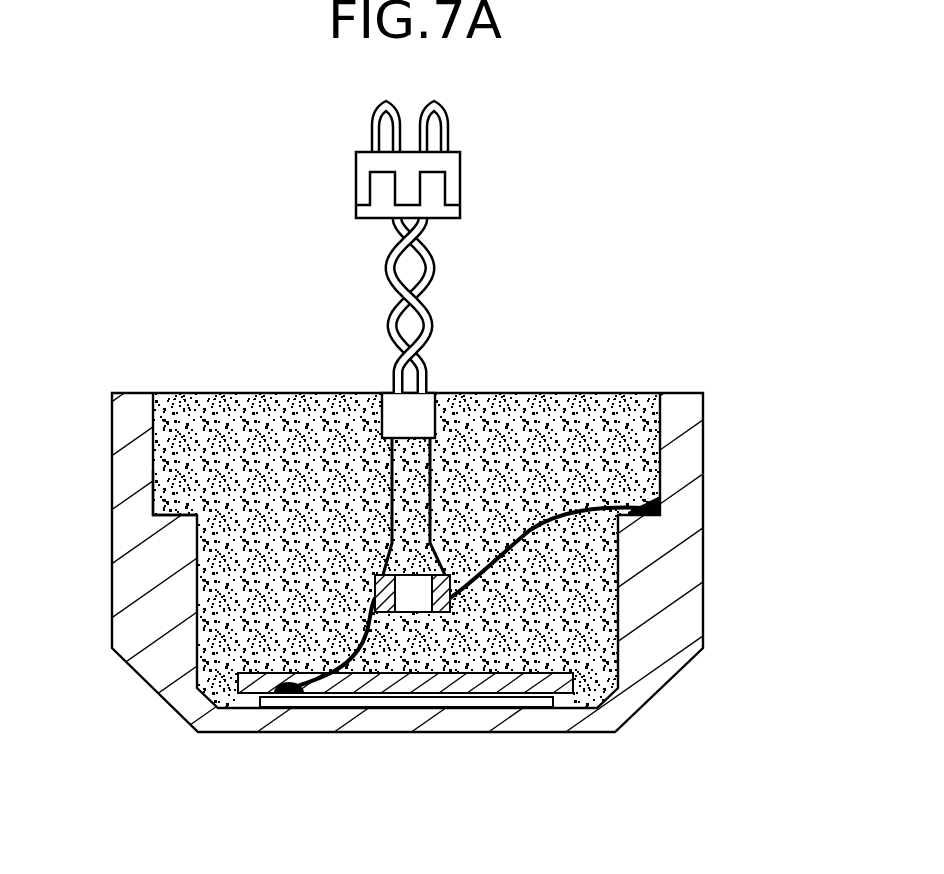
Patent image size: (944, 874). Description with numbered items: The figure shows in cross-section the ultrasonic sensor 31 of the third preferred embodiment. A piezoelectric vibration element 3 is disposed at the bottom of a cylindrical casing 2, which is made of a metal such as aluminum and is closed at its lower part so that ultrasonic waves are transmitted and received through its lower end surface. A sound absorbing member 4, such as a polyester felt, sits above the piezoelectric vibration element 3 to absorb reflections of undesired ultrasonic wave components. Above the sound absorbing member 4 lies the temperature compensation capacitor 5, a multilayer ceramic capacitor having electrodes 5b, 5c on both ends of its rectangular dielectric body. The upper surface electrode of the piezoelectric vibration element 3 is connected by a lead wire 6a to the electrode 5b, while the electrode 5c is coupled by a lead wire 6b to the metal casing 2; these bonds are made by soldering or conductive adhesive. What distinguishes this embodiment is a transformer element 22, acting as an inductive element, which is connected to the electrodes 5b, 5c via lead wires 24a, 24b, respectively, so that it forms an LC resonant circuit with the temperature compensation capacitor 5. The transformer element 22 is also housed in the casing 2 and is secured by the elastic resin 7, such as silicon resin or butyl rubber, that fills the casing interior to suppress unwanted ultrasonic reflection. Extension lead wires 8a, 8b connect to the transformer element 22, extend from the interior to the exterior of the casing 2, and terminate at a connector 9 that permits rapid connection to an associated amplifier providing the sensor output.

The ultrasonic sensor 31 is at (163, 190).
The cylindrical casing 2 is at (703, 562).
The elastic resin 7 is at (153, 487).
The sound absorbing member 4 is at (245, 683).
The piezoelectric vibration element 3 is at (265, 708).
The lead wire 6a is at (312, 695).
The lead wire 6b is at (648, 500).
The temperature compensation capacitor 5 is at (411, 628).
The electrode 5b is at (382, 614).
The electrode 5c is at (445, 614).
The transformer element 22 is at (440, 415).
The lead wire 24a is at (392, 470).
The lead wire 24b is at (430, 485).
The extension lead wire 8a is at (388, 272).
The extension lead wire 8b is at (432, 272).
The connector 9 is at (460, 165).